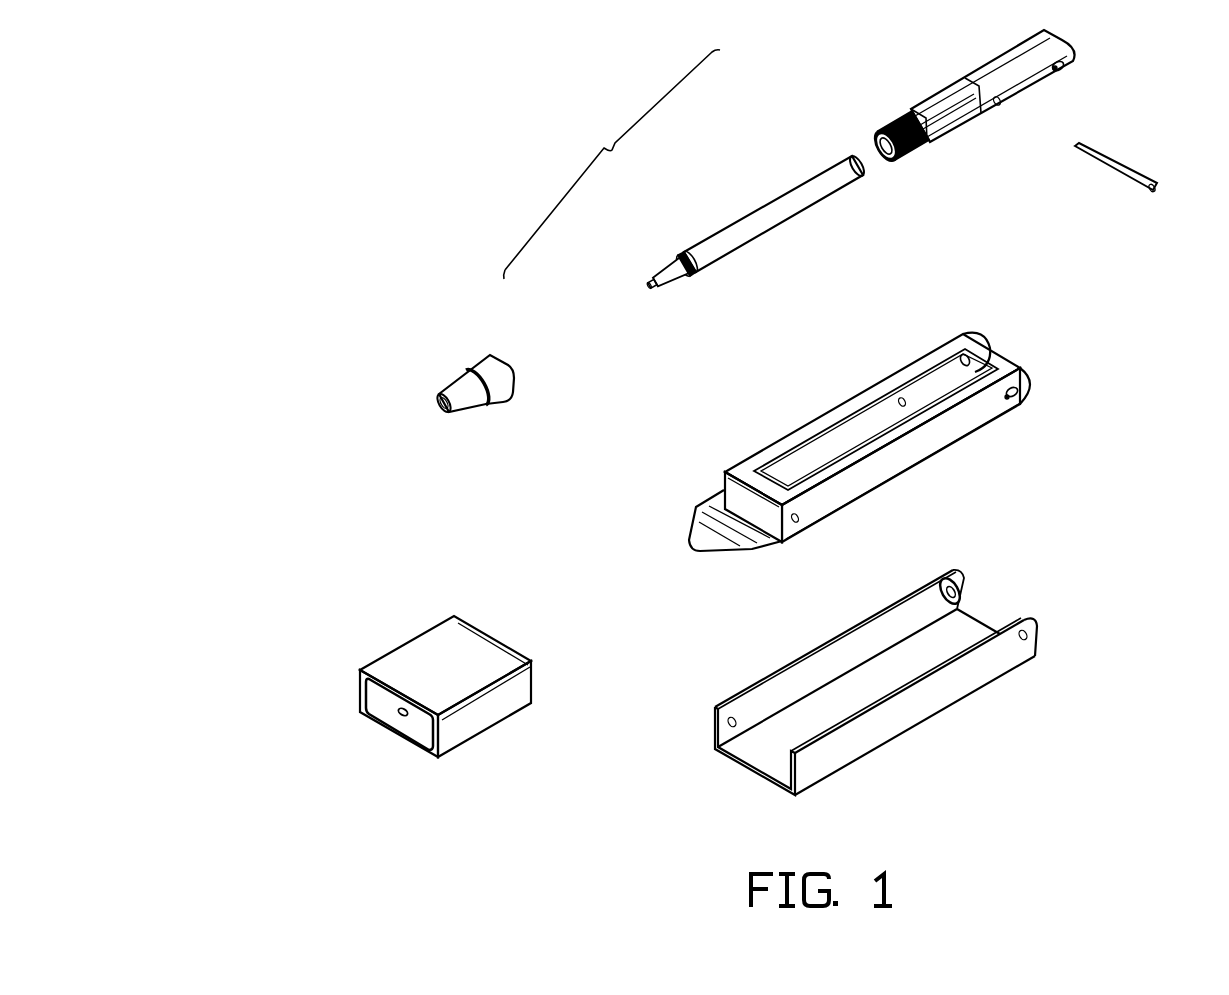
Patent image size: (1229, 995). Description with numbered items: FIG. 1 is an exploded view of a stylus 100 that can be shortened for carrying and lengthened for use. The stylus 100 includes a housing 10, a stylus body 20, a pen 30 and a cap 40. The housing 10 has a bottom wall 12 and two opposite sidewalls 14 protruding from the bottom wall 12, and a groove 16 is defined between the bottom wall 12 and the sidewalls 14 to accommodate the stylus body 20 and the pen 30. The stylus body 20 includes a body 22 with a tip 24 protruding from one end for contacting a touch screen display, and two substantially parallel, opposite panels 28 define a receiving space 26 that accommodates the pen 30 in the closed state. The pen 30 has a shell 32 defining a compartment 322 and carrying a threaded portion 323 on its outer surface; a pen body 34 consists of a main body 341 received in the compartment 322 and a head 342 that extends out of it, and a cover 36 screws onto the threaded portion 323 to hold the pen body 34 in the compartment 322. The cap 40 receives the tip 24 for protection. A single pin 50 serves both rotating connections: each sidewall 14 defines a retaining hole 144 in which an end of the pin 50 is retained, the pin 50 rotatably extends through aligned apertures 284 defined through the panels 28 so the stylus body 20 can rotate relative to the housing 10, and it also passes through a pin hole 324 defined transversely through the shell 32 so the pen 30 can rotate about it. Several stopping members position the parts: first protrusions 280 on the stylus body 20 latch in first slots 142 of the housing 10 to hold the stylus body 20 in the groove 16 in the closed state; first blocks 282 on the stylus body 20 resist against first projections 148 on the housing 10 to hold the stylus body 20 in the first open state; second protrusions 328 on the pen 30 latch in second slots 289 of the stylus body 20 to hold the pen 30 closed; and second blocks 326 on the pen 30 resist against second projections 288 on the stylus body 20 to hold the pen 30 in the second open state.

The stylus 100 is at (396, 142).
The housing 10 is at (1075, 635).
The bottom wall 12 is at (975, 623).
The sidewalls 14 is at (860, 733).
The groove 16 is at (888, 670).
The first slots 142 is at (728, 715).
The retaining hole 144 is at (1026, 650).
The first projections 148 is at (960, 585).
The stylus body 20 is at (1055, 350).
The body 22 is at (738, 483).
The tip 24 is at (733, 500).
The receiving space 26 is at (815, 457).
The panels 28 is at (845, 412).
The first protrusions 280 is at (800, 525).
The first blocks 282 is at (1012, 400).
The apertures 284 is at (1020, 396).
The second projections 288 is at (970, 353).
The second slots 289 is at (900, 397).
The pen 30 is at (608, 146).
The shell 32 is at (912, 115).
The compartment 322 is at (885, 150).
The threaded portion 323 is at (922, 165).
The pin hole 324 is at (1065, 66).
The second blocks 326 is at (1060, 72).
The second protrusions 328 is at (997, 105).
The pen body 34 is at (773, 215).
The main body 341 is at (718, 248).
The head 342 is at (681, 272).
The cover 36 is at (490, 355).
The cap 40 is at (415, 652).
The pin 50 is at (1120, 165).